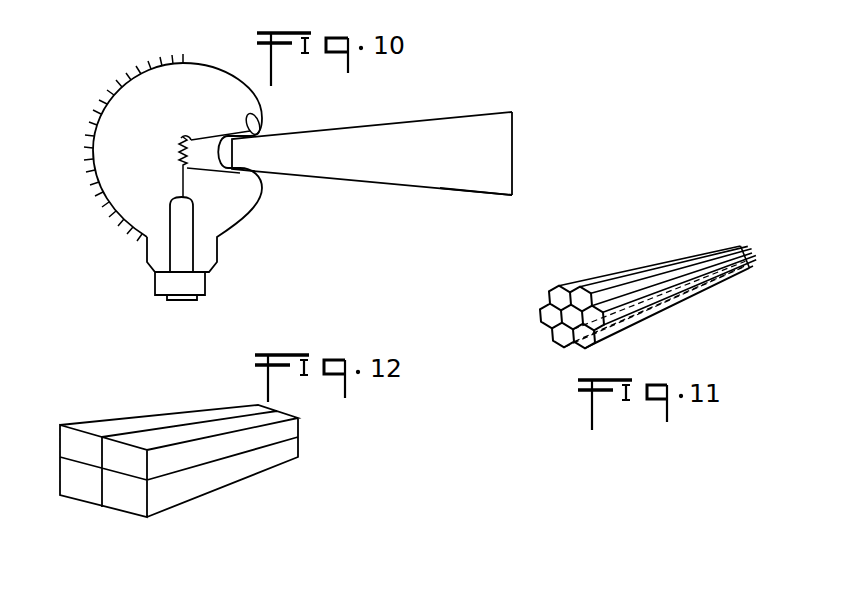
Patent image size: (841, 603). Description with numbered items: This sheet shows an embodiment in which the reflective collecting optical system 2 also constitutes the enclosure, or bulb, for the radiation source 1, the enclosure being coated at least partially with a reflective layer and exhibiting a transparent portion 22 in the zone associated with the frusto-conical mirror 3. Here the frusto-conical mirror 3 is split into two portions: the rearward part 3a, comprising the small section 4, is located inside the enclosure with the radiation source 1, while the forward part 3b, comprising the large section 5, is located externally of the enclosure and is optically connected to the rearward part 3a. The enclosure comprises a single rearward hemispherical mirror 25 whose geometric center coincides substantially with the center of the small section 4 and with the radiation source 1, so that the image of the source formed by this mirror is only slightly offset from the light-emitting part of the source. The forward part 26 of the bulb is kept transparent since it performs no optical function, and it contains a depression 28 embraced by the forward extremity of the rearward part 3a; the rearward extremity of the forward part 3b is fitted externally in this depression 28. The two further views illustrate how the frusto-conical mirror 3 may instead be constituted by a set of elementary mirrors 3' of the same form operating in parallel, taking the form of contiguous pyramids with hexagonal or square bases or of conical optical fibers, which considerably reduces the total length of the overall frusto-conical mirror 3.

In FIG. 10, the radiation source 1 is at (178, 155).
In FIG. 10, the reflective collecting optical system 2 is at (148, 63).
In FIG. 10, the frusto-conical mirror 3 is at (370, 138).
In FIG. 11, the frusto-conical mirror 3 is at (657, 280).
In FIG. 12, the frusto-conical mirror 3 is at (179, 463).
In FIG. 10, the rearward part of the frusto-conical mirror 3a is at (203, 131).
In FIG. 10, the forward part of the frusto-conical mirror 3b is at (467, 196).
In FIG. 11, the elementary mirrors 3' is at (545, 317).
In FIG. 12, the elementary mirrors 3' is at (103, 497).
In FIG. 10, the small section 4 is at (191, 137).
In FIG. 10, the large section 5 is at (512, 152).
In FIG. 10, the transparent portion 22 is at (222, 167).
In FIG. 10, the rearward hemispherical mirror 25 is at (93, 110).
In FIG. 10, the forward part of the bulb 26 is at (218, 73).
In FIG. 10, the depression 28 is at (248, 130).